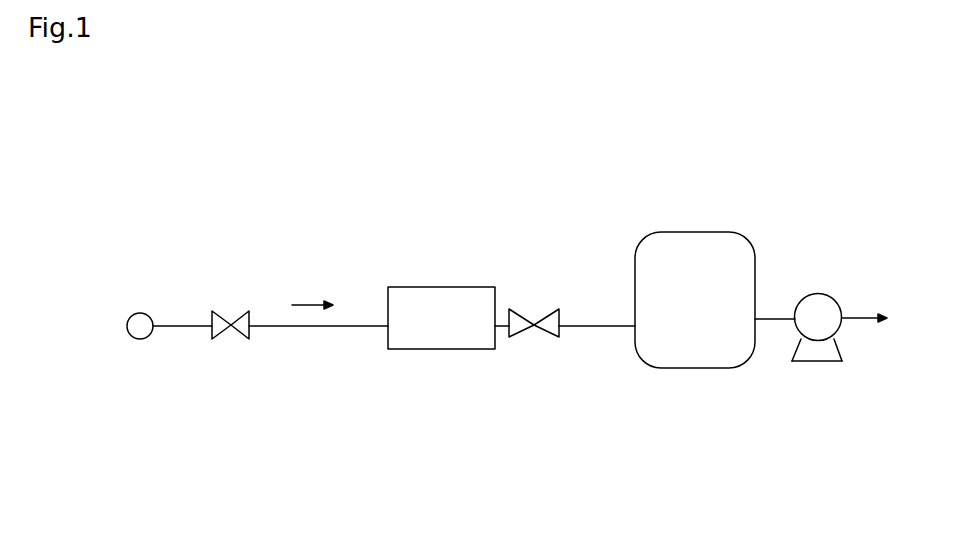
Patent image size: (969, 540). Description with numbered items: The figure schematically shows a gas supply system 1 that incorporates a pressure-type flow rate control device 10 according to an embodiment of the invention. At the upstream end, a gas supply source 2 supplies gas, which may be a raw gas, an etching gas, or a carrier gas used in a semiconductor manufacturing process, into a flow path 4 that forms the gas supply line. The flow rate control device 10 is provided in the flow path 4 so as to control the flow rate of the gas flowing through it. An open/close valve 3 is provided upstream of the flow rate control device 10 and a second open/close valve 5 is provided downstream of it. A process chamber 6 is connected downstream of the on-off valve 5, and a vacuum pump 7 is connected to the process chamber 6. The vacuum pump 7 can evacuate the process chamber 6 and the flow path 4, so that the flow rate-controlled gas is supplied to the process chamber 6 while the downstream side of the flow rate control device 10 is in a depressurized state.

The gas supply system 1 is at (804, 176).
The gas supply source 2 is at (143, 313).
The open/close valve 3 is at (229, 318).
The flow path 4 is at (352, 322).
The flow rate control device 10 is at (441, 285).
The open/close valve 5 is at (532, 320).
The process chamber 6 is at (695, 370).
The vacuum pump 7 is at (815, 365).